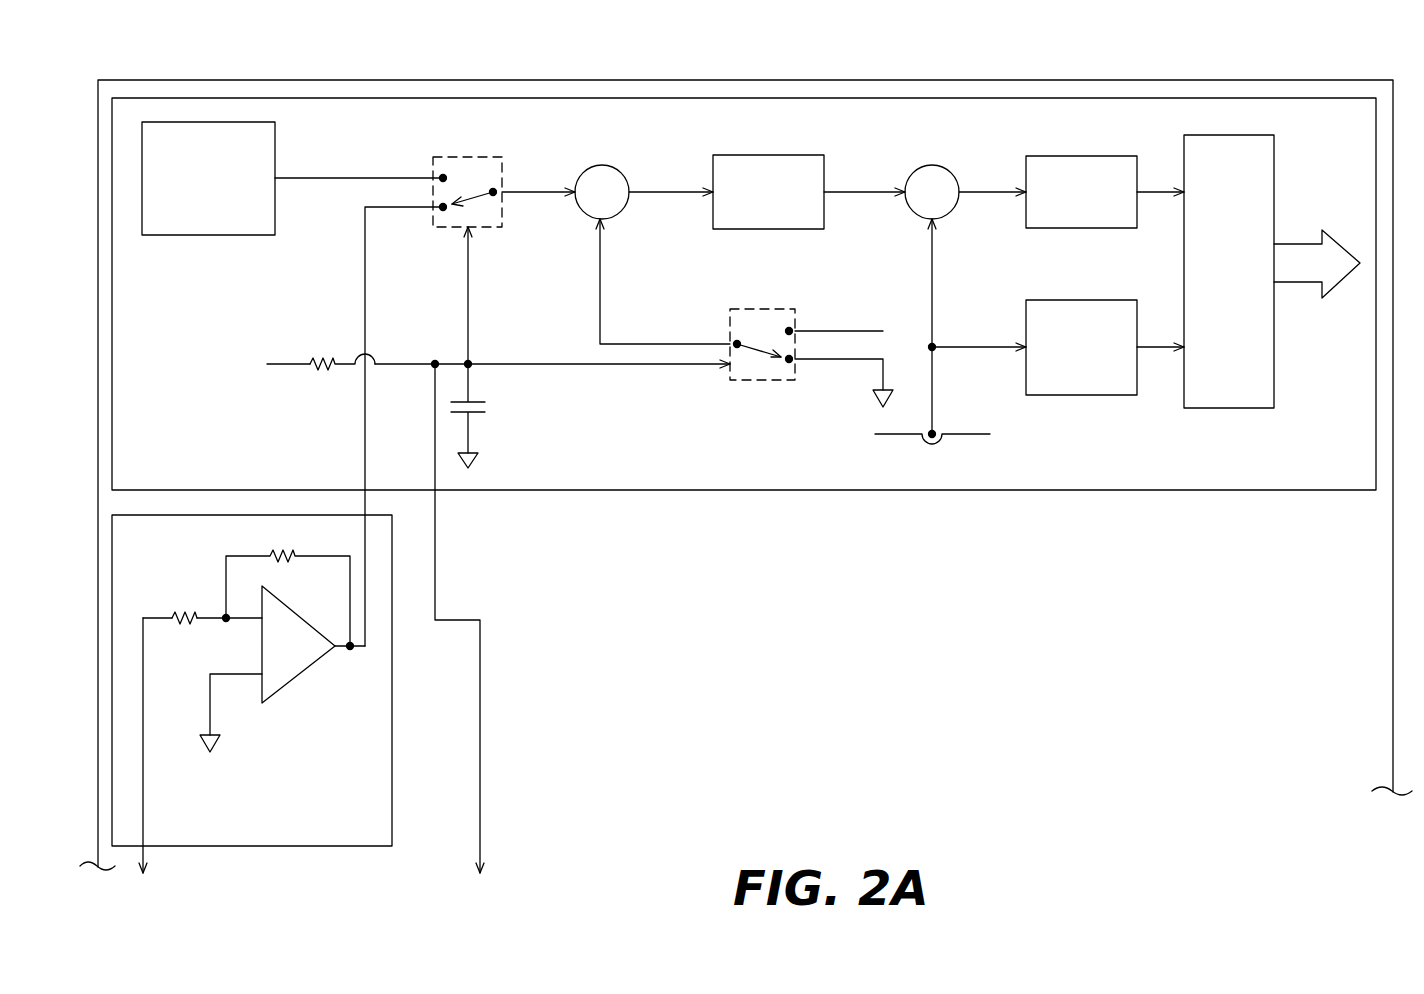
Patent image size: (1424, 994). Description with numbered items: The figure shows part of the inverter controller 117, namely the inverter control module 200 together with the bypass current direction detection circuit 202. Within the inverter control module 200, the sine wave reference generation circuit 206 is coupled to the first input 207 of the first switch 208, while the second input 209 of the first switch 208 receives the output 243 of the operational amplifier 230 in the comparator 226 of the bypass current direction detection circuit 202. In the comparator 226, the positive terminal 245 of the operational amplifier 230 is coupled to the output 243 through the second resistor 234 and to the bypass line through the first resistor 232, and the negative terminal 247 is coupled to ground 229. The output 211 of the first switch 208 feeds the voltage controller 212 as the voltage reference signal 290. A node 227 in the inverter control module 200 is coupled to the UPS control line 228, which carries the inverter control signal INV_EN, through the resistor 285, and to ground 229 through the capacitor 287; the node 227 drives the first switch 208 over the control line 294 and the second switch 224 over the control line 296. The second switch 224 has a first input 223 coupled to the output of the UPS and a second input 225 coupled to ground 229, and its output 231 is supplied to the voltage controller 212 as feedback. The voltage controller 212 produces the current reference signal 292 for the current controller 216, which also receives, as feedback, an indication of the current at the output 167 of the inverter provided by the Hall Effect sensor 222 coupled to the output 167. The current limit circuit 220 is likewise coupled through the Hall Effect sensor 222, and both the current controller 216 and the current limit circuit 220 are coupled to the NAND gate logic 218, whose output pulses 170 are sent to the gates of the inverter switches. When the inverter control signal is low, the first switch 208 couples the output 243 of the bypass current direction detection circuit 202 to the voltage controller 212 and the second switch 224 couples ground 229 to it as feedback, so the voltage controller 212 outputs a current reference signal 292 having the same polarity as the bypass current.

The inverter controller 117 is at (1402, 747).
The output of the inverter 167 is at (990, 436).
The pulses to IGBTs 170 is at (1292, 244).
The inverter control module 200 is at (797, 492).
The bypass current direction detection circuit 202 is at (335, 851).
The sine wave reference generation circuit 206 is at (182, 236).
The first input of the first switch 207 is at (435, 174).
The first switch 208 is at (503, 158).
The second input of the first switch 209 is at (440, 211).
The output of the first switch 211 is at (503, 196).
The voltage controller 212 is at (762, 155).
The current controller 216 is at (1060, 156).
The NAND gate logic 218 is at (1275, 157).
The current limit circuit 220 is at (1050, 300).
The Hall Effect sensor 222 is at (935, 432).
The first input of the second switch 223 is at (820, 333).
The second switch 224 is at (796, 311).
The second input of the second switch 225 is at (856, 361).
The comparator 226 is at (206, 575).
The node 227 is at (433, 361).
The UPS control line 228 is at (268, 370).
The ground 229 is at (477, 462).
The operational amplifier 230 is at (298, 680).
The output of the second switch 231 is at (727, 343).
The first resistor 232 is at (190, 615).
The second resistor 234 is at (277, 553).
The output of the operational amplifier 243 is at (345, 648).
The positive terminal of the operational amplifier 245 is at (258, 622).
The negative terminal of the operational amplifier 247 is at (257, 676).
The resistor 285 is at (313, 362).
The capacitor 287 is at (478, 402).
The voltage reference signal 290 is at (645, 170).
The current reference signal 292 is at (853, 170).
The control line 294 is at (470, 316).
The control line 296 is at (697, 366).